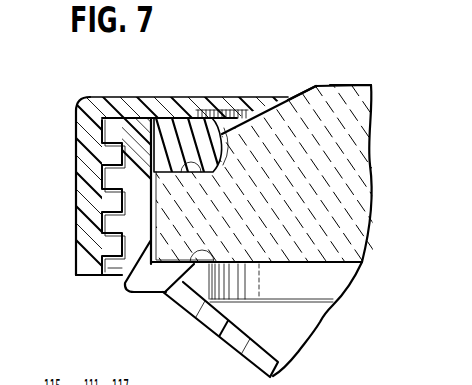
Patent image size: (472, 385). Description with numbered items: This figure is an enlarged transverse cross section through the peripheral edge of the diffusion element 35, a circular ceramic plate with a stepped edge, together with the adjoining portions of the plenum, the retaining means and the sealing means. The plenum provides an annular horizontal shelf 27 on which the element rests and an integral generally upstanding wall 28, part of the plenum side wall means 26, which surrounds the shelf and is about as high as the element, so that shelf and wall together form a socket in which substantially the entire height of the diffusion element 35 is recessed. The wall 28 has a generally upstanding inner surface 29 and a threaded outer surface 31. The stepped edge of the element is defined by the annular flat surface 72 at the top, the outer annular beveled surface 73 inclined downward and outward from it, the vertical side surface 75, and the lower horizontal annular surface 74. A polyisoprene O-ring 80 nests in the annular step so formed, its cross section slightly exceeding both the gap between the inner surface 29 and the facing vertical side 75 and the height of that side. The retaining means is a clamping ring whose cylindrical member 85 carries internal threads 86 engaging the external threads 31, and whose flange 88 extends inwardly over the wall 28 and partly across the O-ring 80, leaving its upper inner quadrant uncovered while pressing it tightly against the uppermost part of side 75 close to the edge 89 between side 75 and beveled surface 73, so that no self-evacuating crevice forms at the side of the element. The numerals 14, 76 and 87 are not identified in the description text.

The door panel plate 14 is at (298, 353).
The plenum side wall means 26 is at (291, 324).
The annular horizontal shelf 27 is at (232, 282).
The upstanding wall 28 is at (142, 276).
The inner surface 29 is at (167, 265).
The threaded outer surface 31 is at (112, 250).
The diffusion element 35 is at (350, 217).
The annular flat surface 72 is at (356, 84).
The outer annular beveled surface 73 is at (306, 85).
The horizontal annular surface 74 is at (199, 174).
The vertical side surface 75 is at (237, 135).
The cavity wall 76 is at (160, 207).
The O-ring 80 is at (188, 137).
The cylindrical member 85 is at (85, 225).
The internal threads 86 is at (112, 274).
The seal housing 87 is at (73, 202).
The flange 88 is at (167, 100).
The edge 89 is at (233, 111).